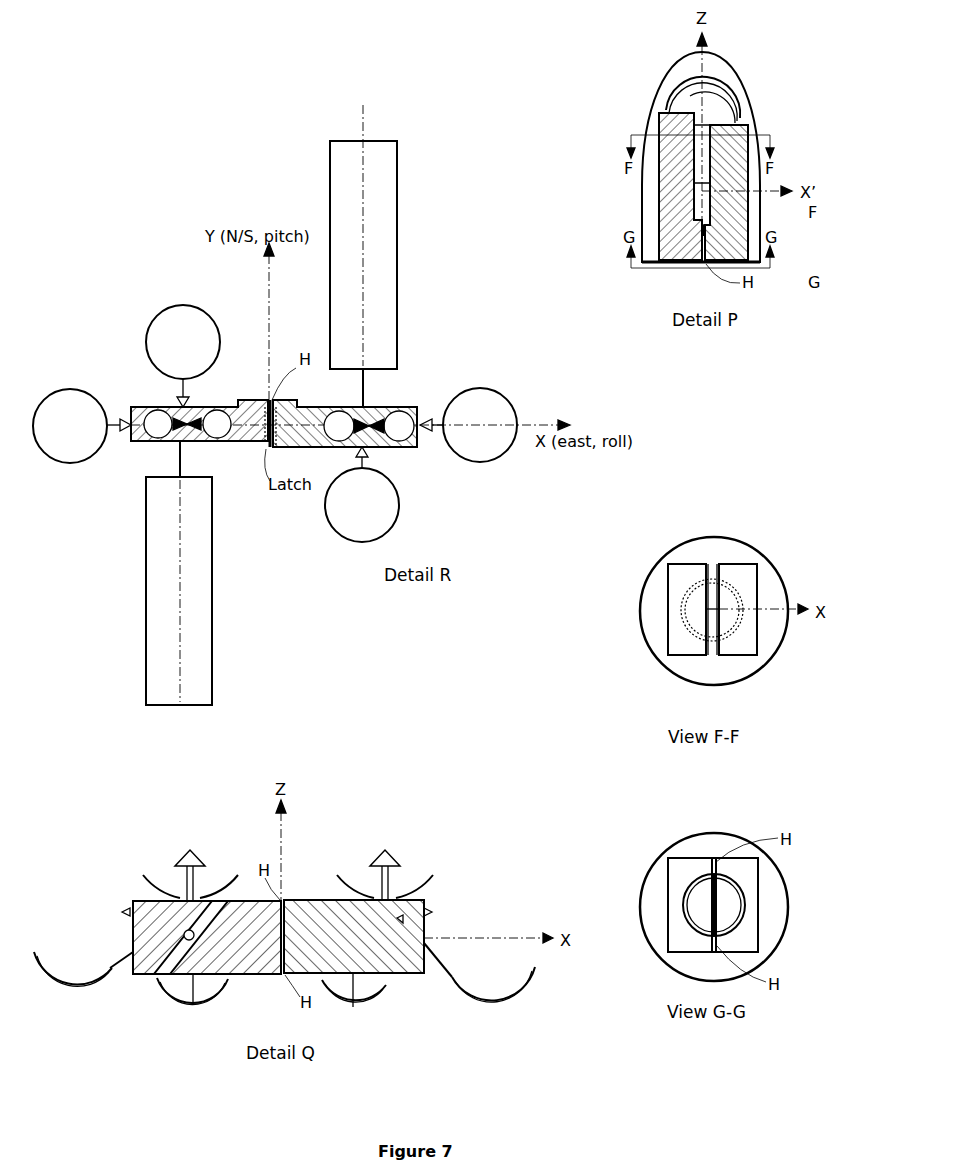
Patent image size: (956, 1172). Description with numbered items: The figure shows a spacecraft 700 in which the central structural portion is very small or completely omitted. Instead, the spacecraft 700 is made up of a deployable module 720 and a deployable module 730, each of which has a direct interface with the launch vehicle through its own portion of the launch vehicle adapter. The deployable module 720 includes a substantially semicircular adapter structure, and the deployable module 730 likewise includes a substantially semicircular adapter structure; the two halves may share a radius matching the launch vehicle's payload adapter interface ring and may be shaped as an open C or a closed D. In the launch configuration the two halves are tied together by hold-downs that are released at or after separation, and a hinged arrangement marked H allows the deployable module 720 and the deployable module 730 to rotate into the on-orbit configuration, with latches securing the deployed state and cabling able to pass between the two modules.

The spacecraft 700 is at (96, 131).
The deployable module 720 is at (155, 443).
The deployable module 730 is at (417, 412).